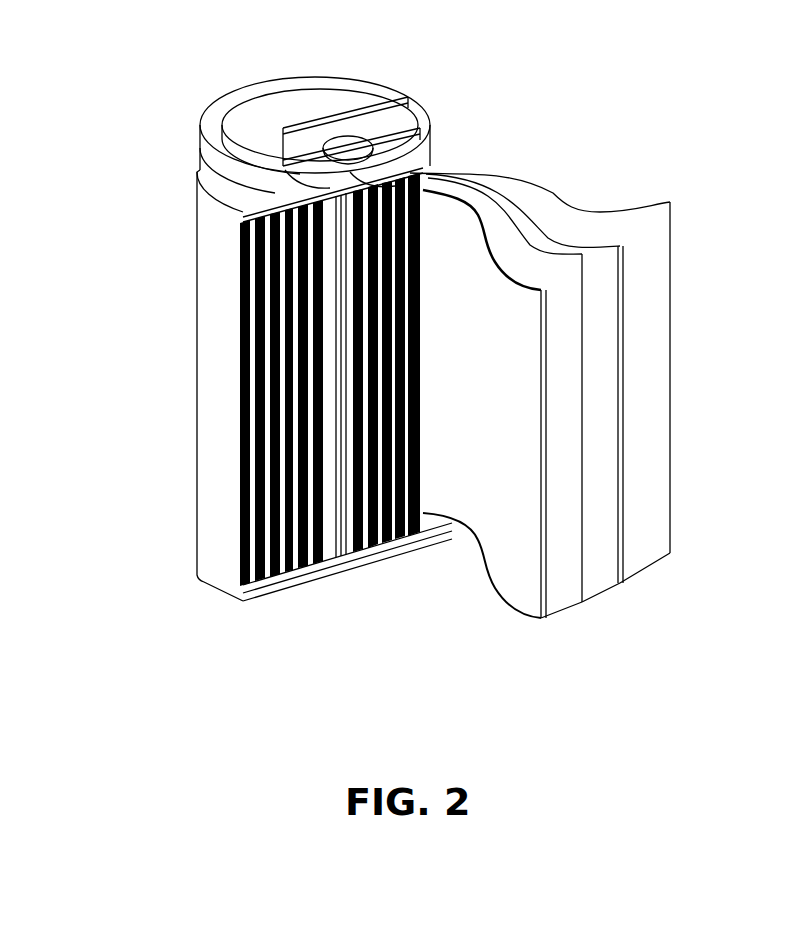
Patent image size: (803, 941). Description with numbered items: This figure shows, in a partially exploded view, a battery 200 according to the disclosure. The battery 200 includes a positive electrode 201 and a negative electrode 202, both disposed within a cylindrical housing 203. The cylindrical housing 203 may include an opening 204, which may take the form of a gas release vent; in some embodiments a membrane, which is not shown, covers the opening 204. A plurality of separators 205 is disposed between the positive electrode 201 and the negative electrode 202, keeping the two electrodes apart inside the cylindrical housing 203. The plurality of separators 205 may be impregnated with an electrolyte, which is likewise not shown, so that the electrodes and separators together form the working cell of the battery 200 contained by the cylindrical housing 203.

The battery 200 is at (165, 121).
The positive electrode 201 is at (502, 470).
The negative electrode 202 is at (603, 452).
The cylindrical housing 203 is at (211, 510).
The opening 204 is at (349, 142).
The separators 205 is at (562, 322).